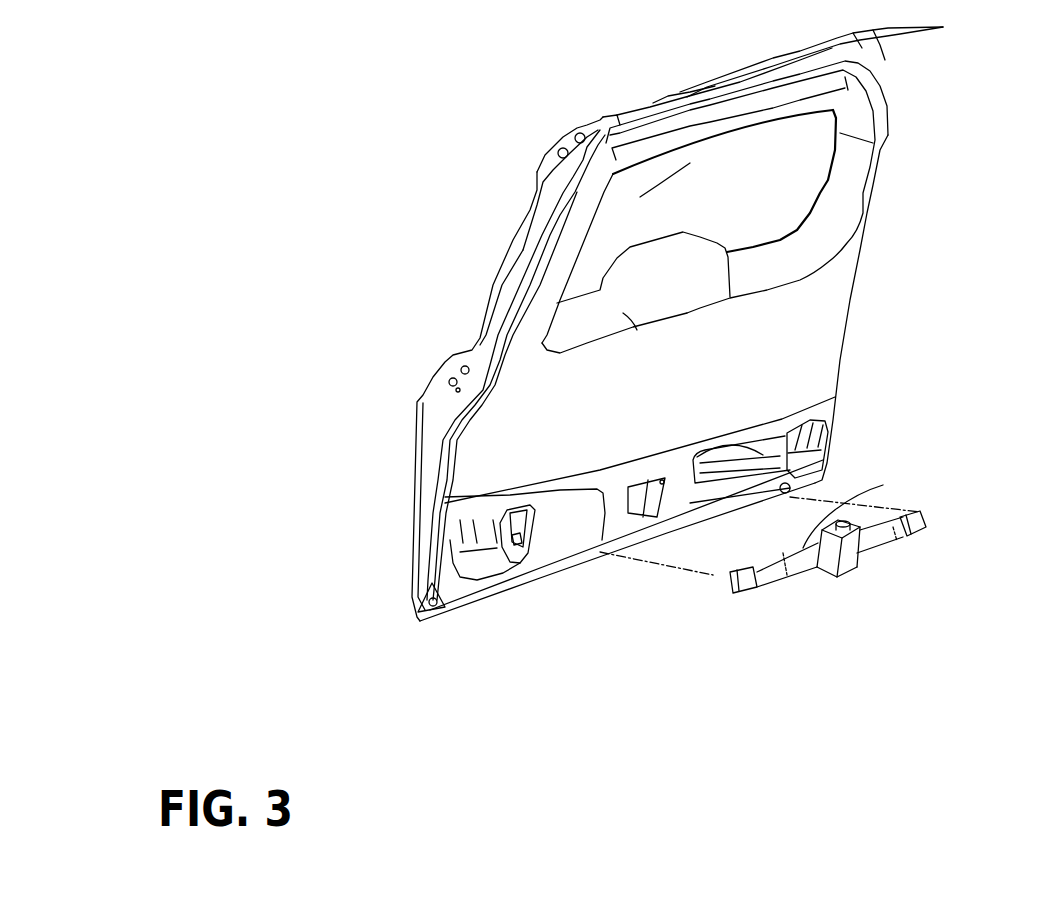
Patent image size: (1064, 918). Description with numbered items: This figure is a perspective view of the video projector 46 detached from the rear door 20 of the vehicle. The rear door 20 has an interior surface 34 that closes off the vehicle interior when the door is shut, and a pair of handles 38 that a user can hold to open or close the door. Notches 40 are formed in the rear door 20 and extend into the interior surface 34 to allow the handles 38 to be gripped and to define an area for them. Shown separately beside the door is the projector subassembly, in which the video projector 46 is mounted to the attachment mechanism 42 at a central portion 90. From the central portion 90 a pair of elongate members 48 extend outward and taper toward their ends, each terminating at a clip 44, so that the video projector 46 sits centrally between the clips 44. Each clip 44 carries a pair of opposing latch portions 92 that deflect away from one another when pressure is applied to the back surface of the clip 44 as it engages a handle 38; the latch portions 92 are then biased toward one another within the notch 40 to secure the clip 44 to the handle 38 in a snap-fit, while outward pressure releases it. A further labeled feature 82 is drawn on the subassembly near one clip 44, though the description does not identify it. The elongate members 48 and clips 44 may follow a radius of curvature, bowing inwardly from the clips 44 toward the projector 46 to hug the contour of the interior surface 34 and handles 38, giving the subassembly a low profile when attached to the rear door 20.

The rear door 20 is at (633, 112).
The interior surface 34 is at (513, 383).
The handles 38 is at (560, 532).
The notches 40 is at (553, 533).
The attachment mechanism 42 is at (803, 580).
The clips 44 is at (743, 585).
The video projector 46 is at (850, 560).
The elongate members 48 is at (870, 527).
The seal 82 is at (896, 543).
The central portion 90 is at (820, 578).
The latch portions 92 is at (731, 572).